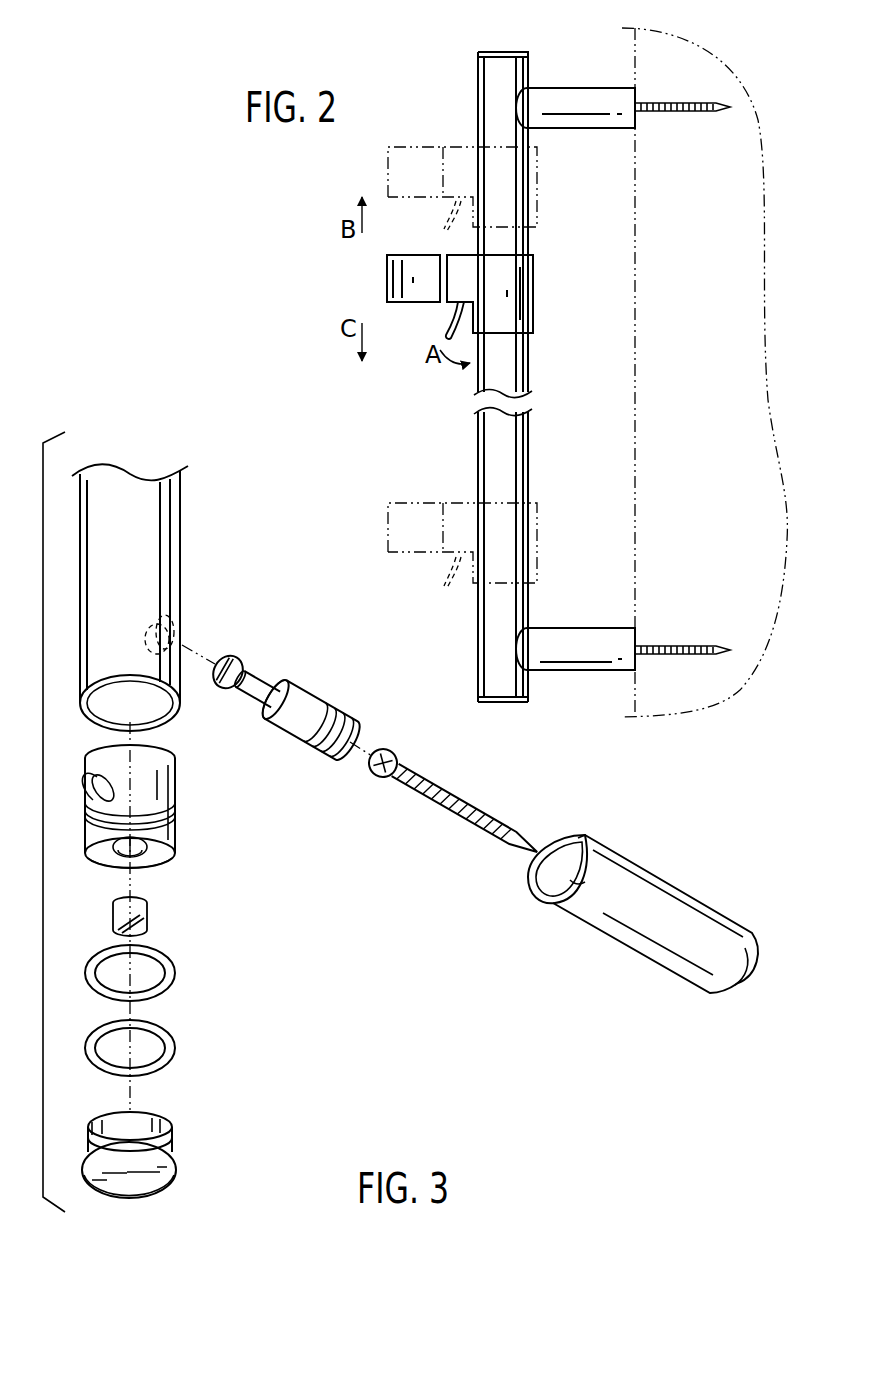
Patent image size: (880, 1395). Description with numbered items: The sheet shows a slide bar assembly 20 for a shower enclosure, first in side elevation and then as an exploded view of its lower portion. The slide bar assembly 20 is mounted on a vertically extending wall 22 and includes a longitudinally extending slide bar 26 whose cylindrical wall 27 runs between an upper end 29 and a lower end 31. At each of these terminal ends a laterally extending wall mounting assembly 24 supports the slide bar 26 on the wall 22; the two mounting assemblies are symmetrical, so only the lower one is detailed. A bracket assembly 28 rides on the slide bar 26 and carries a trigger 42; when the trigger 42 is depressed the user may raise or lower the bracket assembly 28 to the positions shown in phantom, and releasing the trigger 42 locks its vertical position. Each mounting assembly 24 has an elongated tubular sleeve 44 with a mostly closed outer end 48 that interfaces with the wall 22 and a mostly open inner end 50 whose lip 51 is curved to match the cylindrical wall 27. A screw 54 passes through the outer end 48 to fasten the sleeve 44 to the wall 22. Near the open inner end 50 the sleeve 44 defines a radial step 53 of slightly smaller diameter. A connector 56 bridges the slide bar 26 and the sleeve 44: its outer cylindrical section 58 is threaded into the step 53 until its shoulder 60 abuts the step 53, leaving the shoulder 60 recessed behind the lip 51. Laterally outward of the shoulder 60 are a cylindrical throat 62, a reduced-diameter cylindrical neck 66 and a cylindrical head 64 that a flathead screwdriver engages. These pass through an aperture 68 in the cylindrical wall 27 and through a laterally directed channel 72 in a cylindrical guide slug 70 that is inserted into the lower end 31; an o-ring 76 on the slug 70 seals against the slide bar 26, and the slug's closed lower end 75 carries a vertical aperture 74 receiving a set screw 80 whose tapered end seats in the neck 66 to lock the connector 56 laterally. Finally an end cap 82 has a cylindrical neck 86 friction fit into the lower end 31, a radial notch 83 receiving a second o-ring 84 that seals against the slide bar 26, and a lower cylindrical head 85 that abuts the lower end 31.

In FIG. 2, the slide bar assembly 20 is at (524, 31).
In FIG. 2, the wall 22 is at (638, 410).
In FIG. 2, the wall mounting assembly 24 is at (605, 82).
In FIG. 3, the wall mounting assembly 24 is at (237, 795).
In FIG. 2, the slide bar 26 is at (476, 459).
In FIG. 3, the slide bar 26 is at (184, 507).
In FIG. 2, the cylindrical wall 27 is at (478, 427).
In FIG. 3, the cylindrical wall 27 is at (180, 560).
In FIG. 2, the bracket assembly 28 is at (384, 277).
In FIG. 2, the upper end 29 is at (508, 53).
In FIG. 2, the lower end 31 is at (498, 703).
In FIG. 3, the lower end 31 is at (170, 720).
In FIG. 2, the trigger 42 is at (460, 316).
In FIG. 3, the tubular sleeve 44 is at (636, 959).
In FIG. 3, the outer end 48 is at (738, 983).
In FIG. 3, the open inner end 50 is at (534, 896).
In FIG. 3, the lip 51 is at (572, 833).
In FIG. 3, the radial step 53 is at (580, 887).
In FIG. 2, the screw 54 is at (665, 112).
In FIG. 3, the screw 54 is at (438, 807).
In FIG. 3, the connector 56 is at (304, 669).
In FIG. 3, the outer cylindrical section 58 is at (340, 703).
In FIG. 3, the shoulder 60 is at (280, 742).
In FIG. 3, the cylindrical throat 62 is at (257, 668).
In FIG. 3, the cylindrical head 64 is at (223, 653).
In FIG. 3, the cylindrical neck 66 is at (258, 667).
In FIG. 3, the aperture 68 is at (177, 590).
In FIG. 3, the guide slug 70 is at (179, 792).
In FIG. 3, the channel 72 is at (102, 767).
In FIG. 3, the aperture 74 is at (118, 845).
In FIG. 3, the lower end 75 is at (92, 862).
In FIG. 3, the o-ring 76 is at (162, 953).
In FIG. 3, the set screw 80 is at (140, 902).
In FIG. 3, the end cap 82 is at (184, 1157).
In FIG. 3, the radial notch 83 is at (102, 1130).
In FIG. 3, the O-ring 84 is at (173, 1057).
In FIG. 3, the lower cylindrical head 85 is at (158, 1190).
In FIG. 3, the cylindrical neck 86 is at (158, 1130).